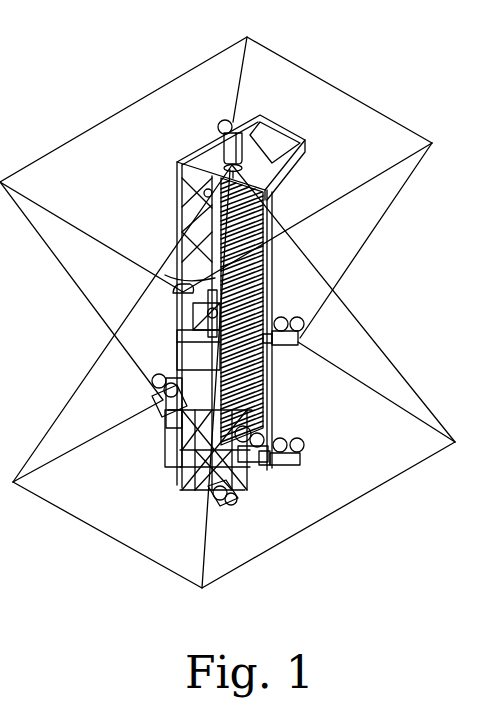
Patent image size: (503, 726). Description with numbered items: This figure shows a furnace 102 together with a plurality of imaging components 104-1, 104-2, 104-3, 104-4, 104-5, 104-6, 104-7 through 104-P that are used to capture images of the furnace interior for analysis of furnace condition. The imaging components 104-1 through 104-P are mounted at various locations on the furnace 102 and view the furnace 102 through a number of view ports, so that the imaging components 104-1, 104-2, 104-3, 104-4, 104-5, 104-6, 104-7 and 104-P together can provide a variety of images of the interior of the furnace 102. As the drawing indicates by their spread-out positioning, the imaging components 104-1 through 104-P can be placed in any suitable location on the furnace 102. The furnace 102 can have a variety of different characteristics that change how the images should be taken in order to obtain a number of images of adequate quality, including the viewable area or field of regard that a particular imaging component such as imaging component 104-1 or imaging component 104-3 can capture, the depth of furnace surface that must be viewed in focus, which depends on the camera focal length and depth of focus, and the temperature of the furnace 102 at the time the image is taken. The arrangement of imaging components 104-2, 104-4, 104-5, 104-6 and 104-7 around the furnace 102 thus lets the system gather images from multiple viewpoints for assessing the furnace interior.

The furnace 102 is at (130, 55).
The imaging component 104-1 is at (222, 120).
The imaging component 104-2 is at (179, 291).
The imaging component 104-3 is at (300, 340).
The imaging component 104-4 is at (192, 344).
The imaging component 104-5 is at (152, 393).
The imaging component 104-6 is at (292, 423).
The imaging component 104-7 is at (302, 457).
The imaging component 104-P is at (227, 504).